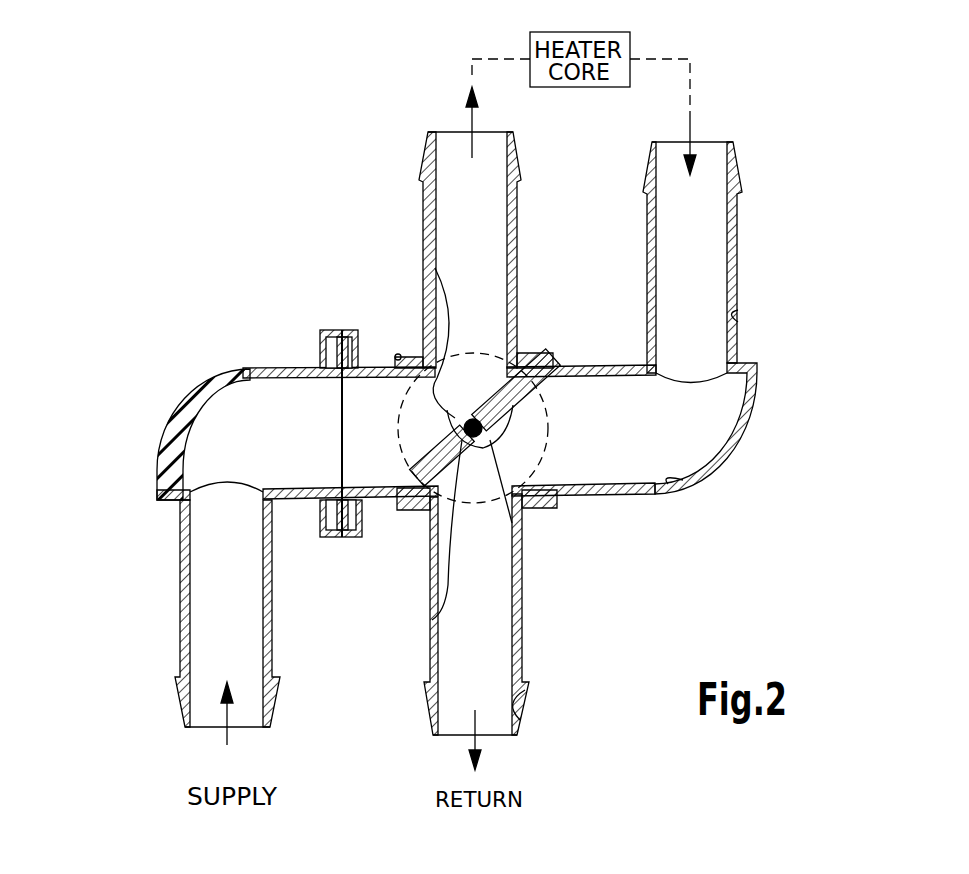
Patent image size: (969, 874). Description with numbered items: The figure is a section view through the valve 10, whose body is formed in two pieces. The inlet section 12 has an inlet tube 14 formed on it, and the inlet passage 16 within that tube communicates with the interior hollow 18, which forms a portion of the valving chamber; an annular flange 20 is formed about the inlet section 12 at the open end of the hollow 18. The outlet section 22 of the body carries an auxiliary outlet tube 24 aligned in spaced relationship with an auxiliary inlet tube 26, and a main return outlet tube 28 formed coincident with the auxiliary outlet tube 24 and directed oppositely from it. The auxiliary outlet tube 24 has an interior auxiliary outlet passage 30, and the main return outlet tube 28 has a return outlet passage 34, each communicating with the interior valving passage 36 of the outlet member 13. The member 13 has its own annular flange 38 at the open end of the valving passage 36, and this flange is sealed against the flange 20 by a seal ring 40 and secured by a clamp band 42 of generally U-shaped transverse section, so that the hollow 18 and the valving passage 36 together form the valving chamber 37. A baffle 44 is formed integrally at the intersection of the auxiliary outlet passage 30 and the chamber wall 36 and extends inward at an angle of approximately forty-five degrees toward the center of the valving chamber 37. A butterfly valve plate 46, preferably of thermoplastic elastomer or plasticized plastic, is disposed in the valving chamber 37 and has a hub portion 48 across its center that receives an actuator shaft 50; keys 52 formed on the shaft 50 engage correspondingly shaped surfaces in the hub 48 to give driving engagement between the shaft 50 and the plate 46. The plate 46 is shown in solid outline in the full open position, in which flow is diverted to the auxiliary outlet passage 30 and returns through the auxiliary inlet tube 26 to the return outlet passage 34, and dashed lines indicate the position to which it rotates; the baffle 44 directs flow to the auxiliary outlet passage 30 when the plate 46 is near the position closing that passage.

The valve 10 is at (462, 407).
The inlet section 12 is at (190, 395).
The member 13 is at (737, 447).
The inlet tube 14 is at (180, 651).
The inlet passage 16 is at (205, 722).
The interior hollow 18 is at (258, 372).
The annular flange 20 is at (315, 515).
The outlet section 22 is at (607, 494).
The auxiliary outlet tube 24 is at (423, 197).
The auxiliary inlet tube 26 is at (738, 223).
The main return outlet tube 28 is at (523, 652).
The auxiliary outlet passage 30 is at (513, 190).
The return outlet passage 34 is at (738, 325).
The interior valving passage 36 is at (683, 480).
The valving chamber 37 is at (353, 434).
The annular flange 38 is at (360, 352).
The seal ring 40 is at (367, 538).
The clamp band 42 is at (318, 330).
The baffle 44 is at (497, 378).
The butterfly valve plate 46 is at (513, 405).
The hub portion 48 is at (522, 565).
The actuator shaft 50 is at (425, 256).
The keys 52 is at (432, 620).